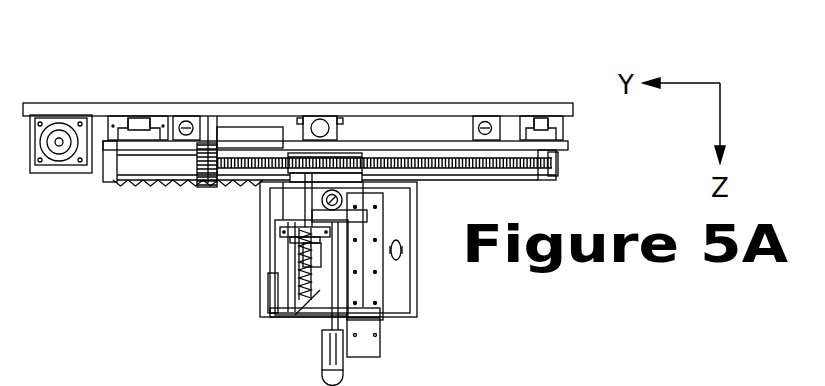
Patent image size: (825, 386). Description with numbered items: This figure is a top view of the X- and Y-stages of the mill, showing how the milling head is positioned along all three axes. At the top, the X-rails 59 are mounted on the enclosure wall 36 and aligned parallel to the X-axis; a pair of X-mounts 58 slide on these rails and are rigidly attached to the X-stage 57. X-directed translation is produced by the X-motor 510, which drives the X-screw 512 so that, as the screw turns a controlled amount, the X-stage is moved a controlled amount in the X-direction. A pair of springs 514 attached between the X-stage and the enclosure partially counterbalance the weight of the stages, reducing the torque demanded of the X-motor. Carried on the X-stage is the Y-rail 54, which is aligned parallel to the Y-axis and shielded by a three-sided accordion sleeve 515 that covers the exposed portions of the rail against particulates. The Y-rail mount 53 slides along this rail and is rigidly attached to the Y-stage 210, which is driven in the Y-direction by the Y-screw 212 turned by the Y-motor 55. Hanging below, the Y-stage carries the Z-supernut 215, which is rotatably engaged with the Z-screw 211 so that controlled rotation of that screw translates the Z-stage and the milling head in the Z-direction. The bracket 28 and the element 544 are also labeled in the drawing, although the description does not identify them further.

The bracket 28 is at (378, 343).
The enclosure wall 36 is at (308, 108).
The Y-rail mount 53 is at (347, 155).
The Y-rail 54 is at (158, 167).
The Y-motor 55 is at (253, 137).
The X-stage 57 is at (420, 145).
The X-mount 58 is at (125, 133).
The X-rail 59 is at (140, 125).
The Y-stage 210 is at (407, 267).
The Z-screw 211 is at (287, 320).
The Y-screw 212 is at (482, 165).
The Z-supernut 215 is at (298, 270).
The X-motor 510 is at (63, 170).
The X-screw 512 is at (322, 118).
The spring 514 is at (188, 120).
The accordion sleeve 515 is at (180, 183).
The element 544 is at (121, 381).